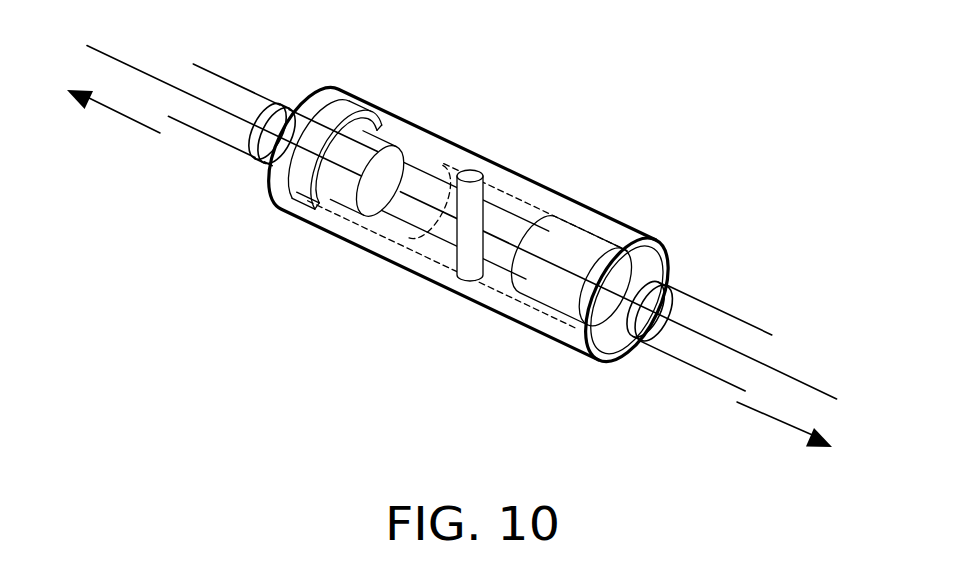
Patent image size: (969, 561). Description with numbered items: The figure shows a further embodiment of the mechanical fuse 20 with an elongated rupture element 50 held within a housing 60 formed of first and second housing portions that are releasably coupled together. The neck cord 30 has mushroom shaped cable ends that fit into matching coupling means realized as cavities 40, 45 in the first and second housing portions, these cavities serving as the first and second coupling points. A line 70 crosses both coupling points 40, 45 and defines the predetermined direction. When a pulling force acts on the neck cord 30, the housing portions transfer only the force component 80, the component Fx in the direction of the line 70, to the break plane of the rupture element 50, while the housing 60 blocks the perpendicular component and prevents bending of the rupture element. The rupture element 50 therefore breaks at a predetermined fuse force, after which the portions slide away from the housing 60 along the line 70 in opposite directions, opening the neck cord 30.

The mechanical fuse 20 is at (664, 113).
The neck cord 30 is at (227, 88).
The cavity / first coupling point 40 is at (414, 165).
The cavity / second coupling point 45 is at (548, 232).
The rupture element 50 is at (470, 170).
The housing 60 is at (521, 163).
The line crossing the coupling points 70 is at (806, 376).
The force component Fx 80 is at (450, 272).